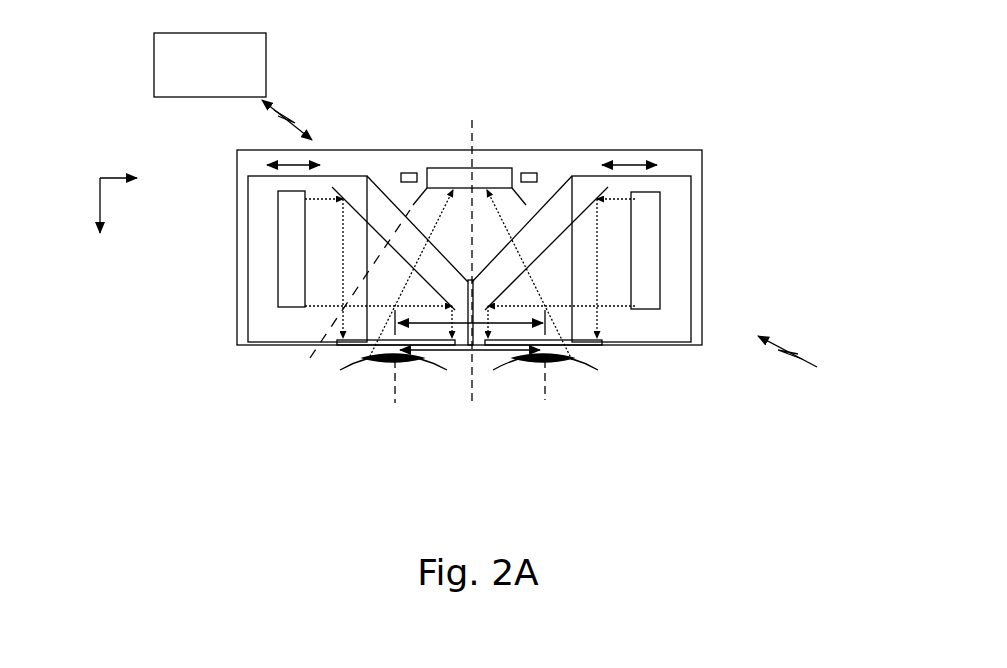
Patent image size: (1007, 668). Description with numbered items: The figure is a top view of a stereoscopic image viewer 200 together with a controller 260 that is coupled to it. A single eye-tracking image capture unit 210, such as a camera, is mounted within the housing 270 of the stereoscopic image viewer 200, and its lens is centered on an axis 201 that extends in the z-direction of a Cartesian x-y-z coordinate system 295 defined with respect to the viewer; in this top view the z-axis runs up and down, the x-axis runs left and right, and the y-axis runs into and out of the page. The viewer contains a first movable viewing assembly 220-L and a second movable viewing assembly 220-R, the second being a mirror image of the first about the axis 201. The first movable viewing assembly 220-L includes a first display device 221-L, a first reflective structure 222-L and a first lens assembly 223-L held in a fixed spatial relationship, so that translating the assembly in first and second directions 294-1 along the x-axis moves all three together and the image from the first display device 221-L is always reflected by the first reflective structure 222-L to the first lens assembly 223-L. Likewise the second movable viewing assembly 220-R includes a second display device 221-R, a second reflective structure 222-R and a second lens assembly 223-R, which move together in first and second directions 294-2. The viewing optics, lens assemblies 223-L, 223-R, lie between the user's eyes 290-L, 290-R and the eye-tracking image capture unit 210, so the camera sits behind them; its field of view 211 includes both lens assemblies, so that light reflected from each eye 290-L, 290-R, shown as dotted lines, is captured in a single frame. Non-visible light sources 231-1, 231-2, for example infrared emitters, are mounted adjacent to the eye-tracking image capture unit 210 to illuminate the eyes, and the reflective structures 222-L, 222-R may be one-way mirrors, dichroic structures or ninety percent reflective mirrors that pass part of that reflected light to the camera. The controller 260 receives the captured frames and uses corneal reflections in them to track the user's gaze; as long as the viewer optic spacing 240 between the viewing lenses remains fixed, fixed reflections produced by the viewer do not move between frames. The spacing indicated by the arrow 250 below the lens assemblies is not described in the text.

The stereoscopic image viewer 200 is at (796, 362).
The axis 201 is at (473, 120).
The eye-tracking image capture unit 210 is at (447, 168).
The field of view 211 is at (416, 215).
The first movable viewing assembly 220-L is at (257, 183).
The second movable viewing assembly 220-R is at (682, 187).
The first display device 221-L is at (290, 242).
The second display device 221-R is at (647, 251).
The first reflective structure 222-L is at (358, 200).
The second reflective structure 222-R is at (575, 168).
The first lens assembly 223-L is at (345, 343).
The second lens assembly 223-R is at (602, 345).
The non-visible light source 231-1 is at (407, 173).
The non-visible light source 231-2 is at (530, 173).
The viewer optic spacing 240 is at (437, 322).
The lens spacing 250 is at (493, 357).
The controller 260 is at (267, 62).
The housing 270 is at (680, 148).
The eye 290-L is at (368, 370).
The eye 290-R is at (560, 368).
The first and second directions 294-1 is at (285, 160).
The first and second directions 294-2 is at (626, 160).
The Cartesian x-y-z coordinate system 295 is at (118, 157).